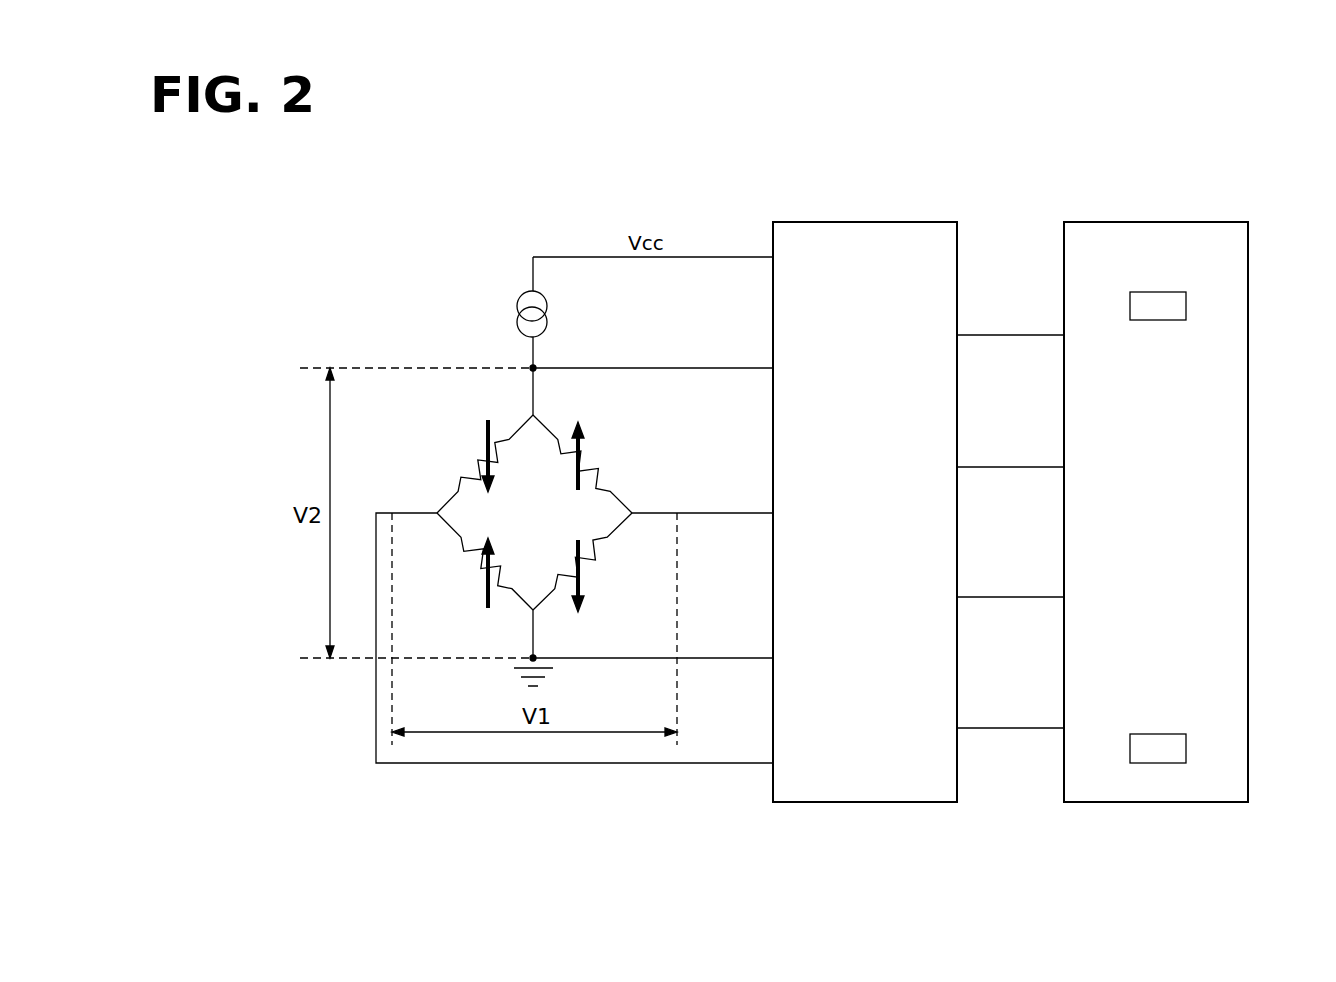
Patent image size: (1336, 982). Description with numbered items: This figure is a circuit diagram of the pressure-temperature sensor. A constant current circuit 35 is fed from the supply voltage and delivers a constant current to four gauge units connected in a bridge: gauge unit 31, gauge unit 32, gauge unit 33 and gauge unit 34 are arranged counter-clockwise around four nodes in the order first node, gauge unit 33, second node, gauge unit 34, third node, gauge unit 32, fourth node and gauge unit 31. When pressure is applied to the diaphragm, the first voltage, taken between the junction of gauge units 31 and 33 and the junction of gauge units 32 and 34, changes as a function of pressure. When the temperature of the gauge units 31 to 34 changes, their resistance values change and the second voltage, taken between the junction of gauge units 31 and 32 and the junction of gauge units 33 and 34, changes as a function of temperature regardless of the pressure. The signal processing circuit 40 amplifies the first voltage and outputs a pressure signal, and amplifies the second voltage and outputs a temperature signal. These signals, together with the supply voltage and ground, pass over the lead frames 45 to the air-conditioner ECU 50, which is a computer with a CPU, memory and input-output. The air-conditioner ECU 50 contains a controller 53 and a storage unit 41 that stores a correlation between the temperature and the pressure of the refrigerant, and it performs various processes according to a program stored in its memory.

The first gauge unit 31 is at (480, 482).
The second gauge unit 32 is at (596, 480).
The third gauge unit 33 is at (484, 556).
The fourth gauge unit 34 is at (578, 586).
The constant current circuit 35 is at (517, 305).
The signal processing circuit 40 is at (866, 222).
The storage unit 41 is at (1158, 763).
The lead frames 45 is at (958, 338).
The air-conditioner ECU 50 is at (1152, 222).
The controller 53 is at (1158, 320).